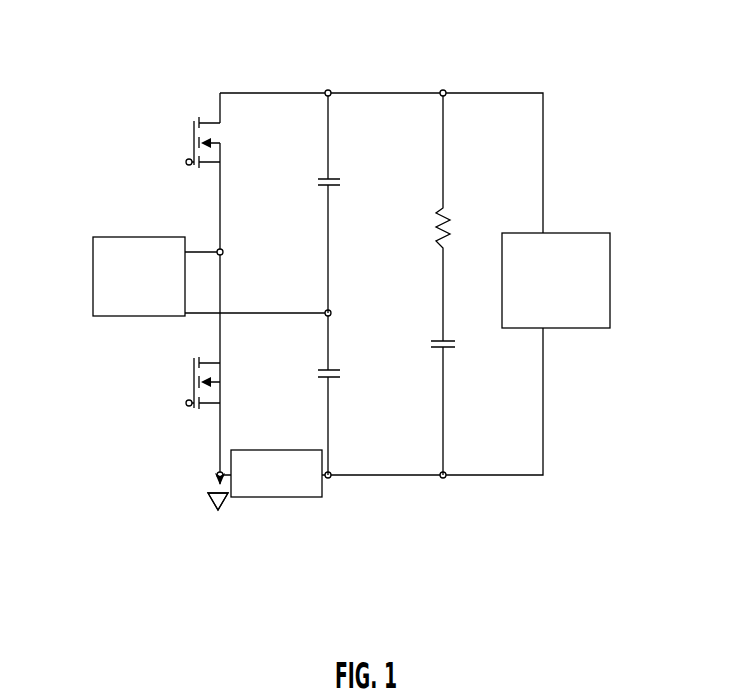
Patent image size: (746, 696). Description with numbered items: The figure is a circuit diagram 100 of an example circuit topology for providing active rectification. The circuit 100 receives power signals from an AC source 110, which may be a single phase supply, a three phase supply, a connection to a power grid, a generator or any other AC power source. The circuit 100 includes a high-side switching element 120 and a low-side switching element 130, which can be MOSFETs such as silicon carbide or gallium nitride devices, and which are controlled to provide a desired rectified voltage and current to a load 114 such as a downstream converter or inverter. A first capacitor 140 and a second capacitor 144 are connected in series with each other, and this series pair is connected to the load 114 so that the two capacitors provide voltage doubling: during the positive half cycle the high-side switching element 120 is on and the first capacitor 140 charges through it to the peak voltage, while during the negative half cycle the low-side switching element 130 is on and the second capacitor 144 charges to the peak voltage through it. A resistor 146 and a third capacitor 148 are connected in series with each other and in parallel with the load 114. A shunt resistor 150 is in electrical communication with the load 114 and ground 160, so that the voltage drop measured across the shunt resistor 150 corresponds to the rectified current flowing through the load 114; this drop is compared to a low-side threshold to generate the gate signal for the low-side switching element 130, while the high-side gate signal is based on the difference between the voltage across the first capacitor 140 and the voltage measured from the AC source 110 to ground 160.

The circuit 100 is at (664, 60).
The AC source 110 is at (90, 268).
The load 114 is at (615, 268).
The high-side switching element 120 is at (183, 143).
The low-side switching element 130 is at (183, 393).
The first capacitor 140 is at (349, 184).
The second capacitor 144 is at (349, 375).
The resistor 146 is at (460, 228).
The third capacitor 148 is at (463, 343).
The shunt resistor 150 is at (332, 490).
The ground 160 is at (198, 495).